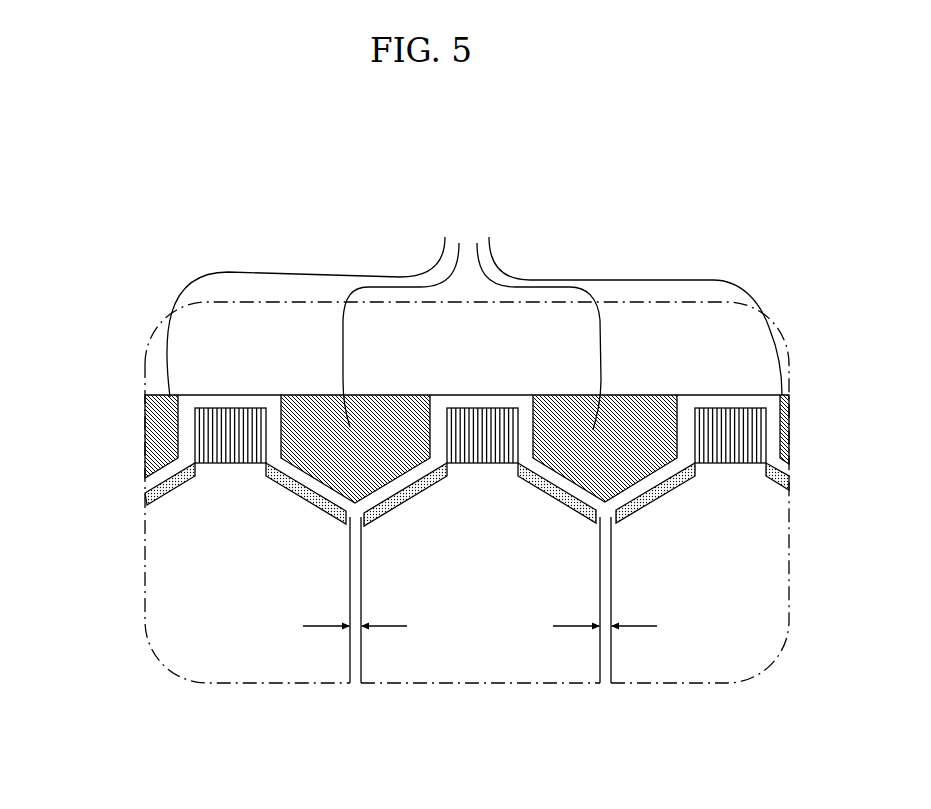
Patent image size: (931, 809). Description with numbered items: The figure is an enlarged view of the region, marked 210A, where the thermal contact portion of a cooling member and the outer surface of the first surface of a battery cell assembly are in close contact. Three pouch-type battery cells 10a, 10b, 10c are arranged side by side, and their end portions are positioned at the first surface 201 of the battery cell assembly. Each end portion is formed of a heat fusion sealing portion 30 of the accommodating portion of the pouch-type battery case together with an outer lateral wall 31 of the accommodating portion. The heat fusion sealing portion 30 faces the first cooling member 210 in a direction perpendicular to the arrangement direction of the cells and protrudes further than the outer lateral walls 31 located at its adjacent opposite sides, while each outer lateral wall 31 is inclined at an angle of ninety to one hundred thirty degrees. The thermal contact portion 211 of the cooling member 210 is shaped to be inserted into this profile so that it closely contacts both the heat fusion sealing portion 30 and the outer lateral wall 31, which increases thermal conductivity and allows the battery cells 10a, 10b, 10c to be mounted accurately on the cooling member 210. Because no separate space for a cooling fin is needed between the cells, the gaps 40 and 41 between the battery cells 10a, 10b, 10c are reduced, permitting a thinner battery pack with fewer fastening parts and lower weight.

The anode assembly 210A is at (180, 256).
The first cooling member 210 is at (138, 394).
The thermal contact portion 211 is at (474, 321).
The heat fusion sealing portion 30 is at (222, 428).
The first surface 201 is at (160, 445).
The outer lateral wall 31 is at (153, 494).
The gap 40 is at (350, 640).
The gap 41 is at (608, 632).
The battery cell 10a is at (243, 645).
The battery cell 10b is at (500, 648).
The battery cell 10c is at (703, 643).